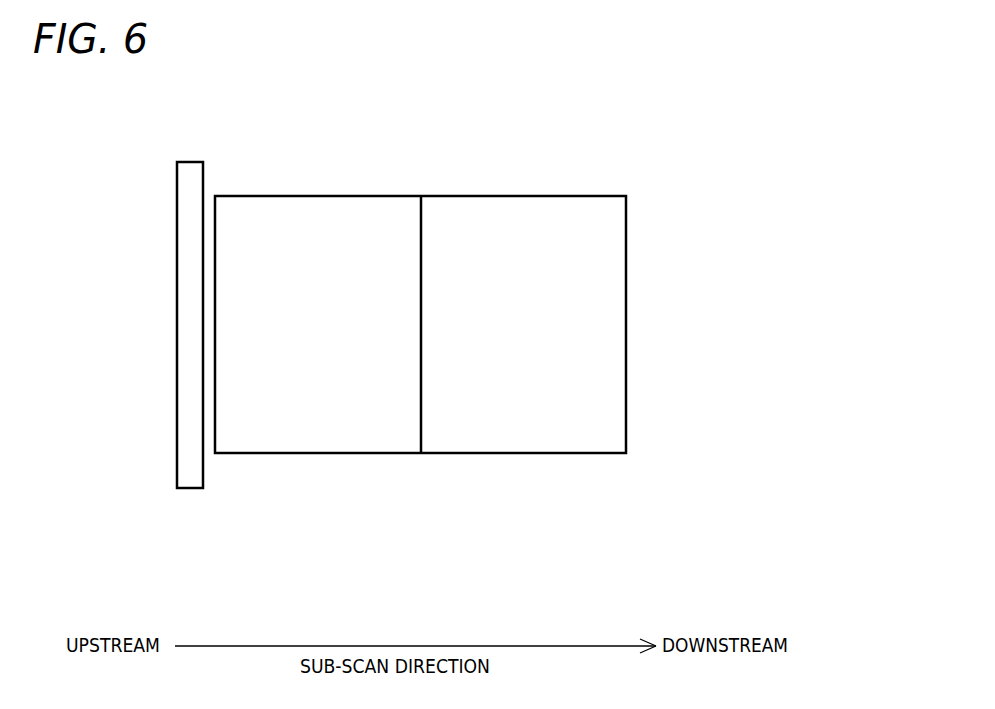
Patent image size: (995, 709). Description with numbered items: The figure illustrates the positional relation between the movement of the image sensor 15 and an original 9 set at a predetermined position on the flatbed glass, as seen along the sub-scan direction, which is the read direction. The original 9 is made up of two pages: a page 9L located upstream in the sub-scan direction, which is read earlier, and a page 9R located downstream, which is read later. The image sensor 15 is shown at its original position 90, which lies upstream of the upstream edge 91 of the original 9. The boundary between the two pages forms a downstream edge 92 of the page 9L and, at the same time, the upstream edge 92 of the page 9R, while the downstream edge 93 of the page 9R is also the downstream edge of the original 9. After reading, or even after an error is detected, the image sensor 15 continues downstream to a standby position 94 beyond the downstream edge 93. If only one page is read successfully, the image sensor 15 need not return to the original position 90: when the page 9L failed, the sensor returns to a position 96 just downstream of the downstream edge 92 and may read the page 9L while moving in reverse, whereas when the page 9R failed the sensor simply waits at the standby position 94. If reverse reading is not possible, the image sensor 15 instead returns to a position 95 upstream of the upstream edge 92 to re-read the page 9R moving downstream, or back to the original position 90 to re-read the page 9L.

The original 9 is at (641, 174).
The page 9L is at (300, 203).
The page 9R is at (540, 203).
The image sensor 15 is at (190, 160).
The original position 90 is at (190, 492).
The upstream edge 91 is at (215, 457).
The downstream edge 92 is at (421, 457).
The downstream edge 93 is at (626, 458).
The standby position 94 is at (651, 429).
The position 95 is at (392, 457).
The position 96 is at (449, 457).